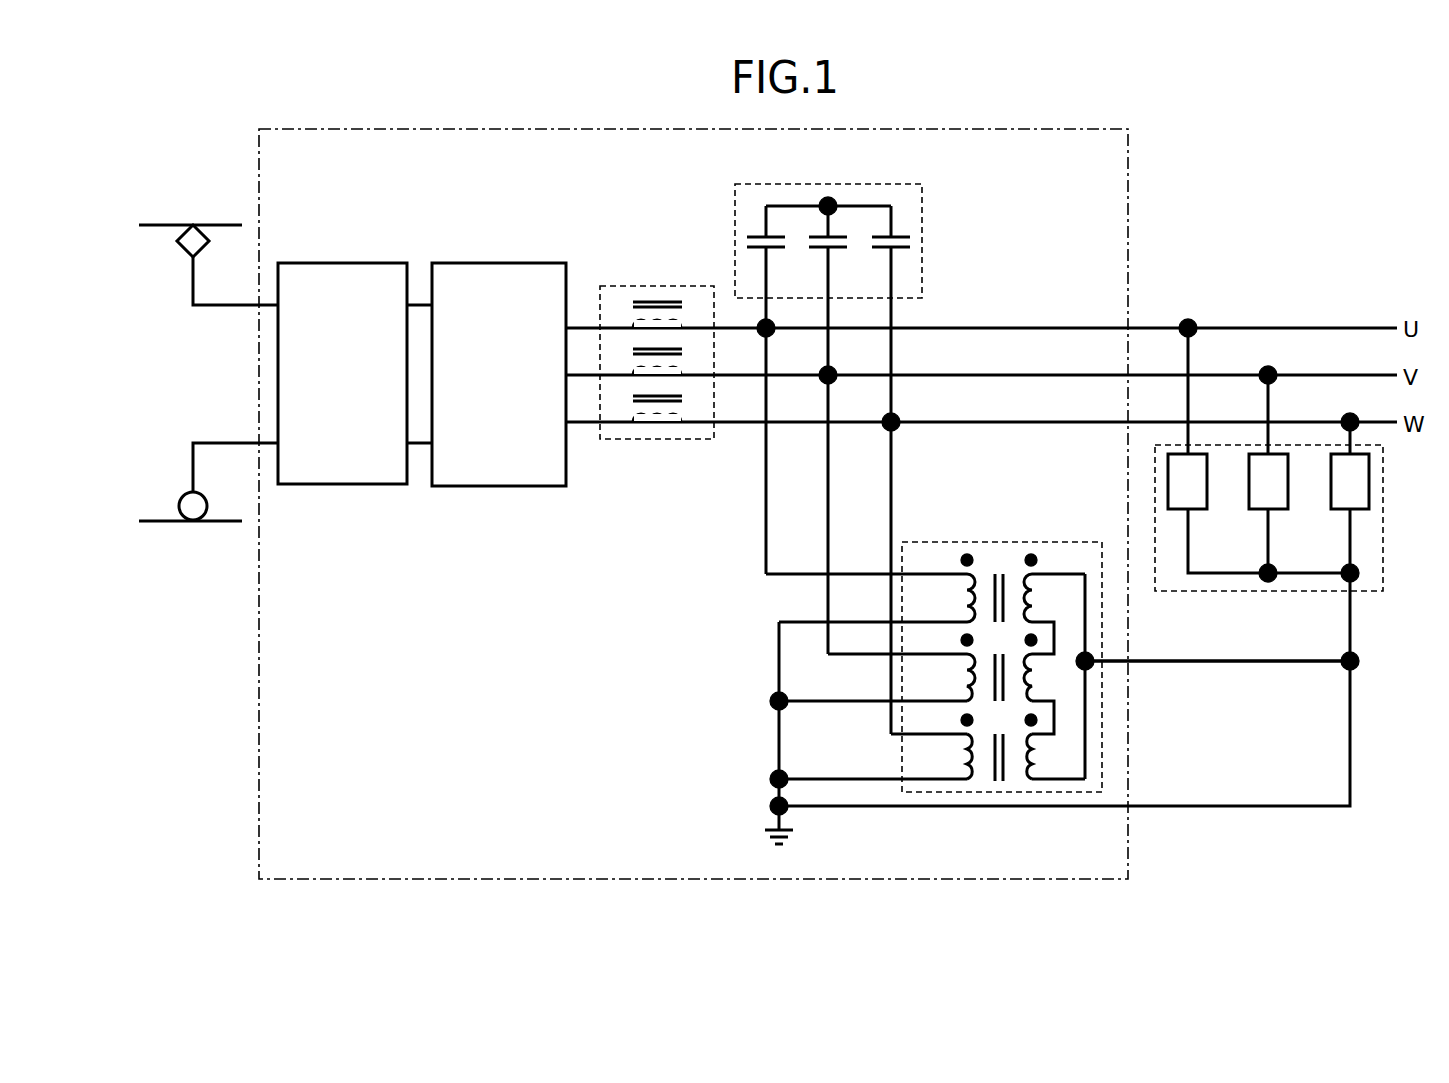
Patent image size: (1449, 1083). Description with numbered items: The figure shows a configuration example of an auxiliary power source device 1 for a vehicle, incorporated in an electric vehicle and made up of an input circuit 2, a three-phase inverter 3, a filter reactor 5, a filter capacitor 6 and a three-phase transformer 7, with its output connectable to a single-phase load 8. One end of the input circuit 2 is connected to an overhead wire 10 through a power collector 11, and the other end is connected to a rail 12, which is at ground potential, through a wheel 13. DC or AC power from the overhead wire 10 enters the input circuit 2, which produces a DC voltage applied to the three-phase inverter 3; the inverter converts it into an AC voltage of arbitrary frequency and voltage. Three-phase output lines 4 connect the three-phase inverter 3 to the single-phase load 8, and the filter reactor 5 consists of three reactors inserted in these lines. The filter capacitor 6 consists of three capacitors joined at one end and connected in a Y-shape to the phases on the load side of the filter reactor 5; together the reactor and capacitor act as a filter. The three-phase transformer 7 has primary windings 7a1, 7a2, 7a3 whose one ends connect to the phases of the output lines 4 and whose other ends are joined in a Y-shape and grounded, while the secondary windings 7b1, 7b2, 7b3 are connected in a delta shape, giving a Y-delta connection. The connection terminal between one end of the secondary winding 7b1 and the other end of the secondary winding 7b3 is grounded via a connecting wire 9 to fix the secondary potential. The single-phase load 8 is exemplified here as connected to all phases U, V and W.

The auxiliary power source device for a vehicle 1 is at (1130, 163).
The input circuit 2 is at (358, 251).
The three-phase inverter 3 is at (507, 264).
The three-phase output lines 4 is at (1030, 443).
The filter reactor 5 is at (660, 285).
The filter capacitor 6 is at (829, 184).
The three-phase transformer 7 is at (1057, 702).
The primary winding 7a1 is at (946, 600).
The primary winding 7a2 is at (946, 680).
The primary winding 7a3 is at (946, 760).
The secondary winding 7b1 is at (1044, 604).
The secondary winding 7b2 is at (1044, 683).
The secondary winding 7b3 is at (1044, 758).
The single-phase load 8 is at (1288, 592).
The connecting wire 9 is at (1239, 663).
The overhead wire 10 is at (170, 226).
The power collector 11 is at (182, 252).
The rail 12 is at (168, 521).
The wheel 13 is at (181, 496).